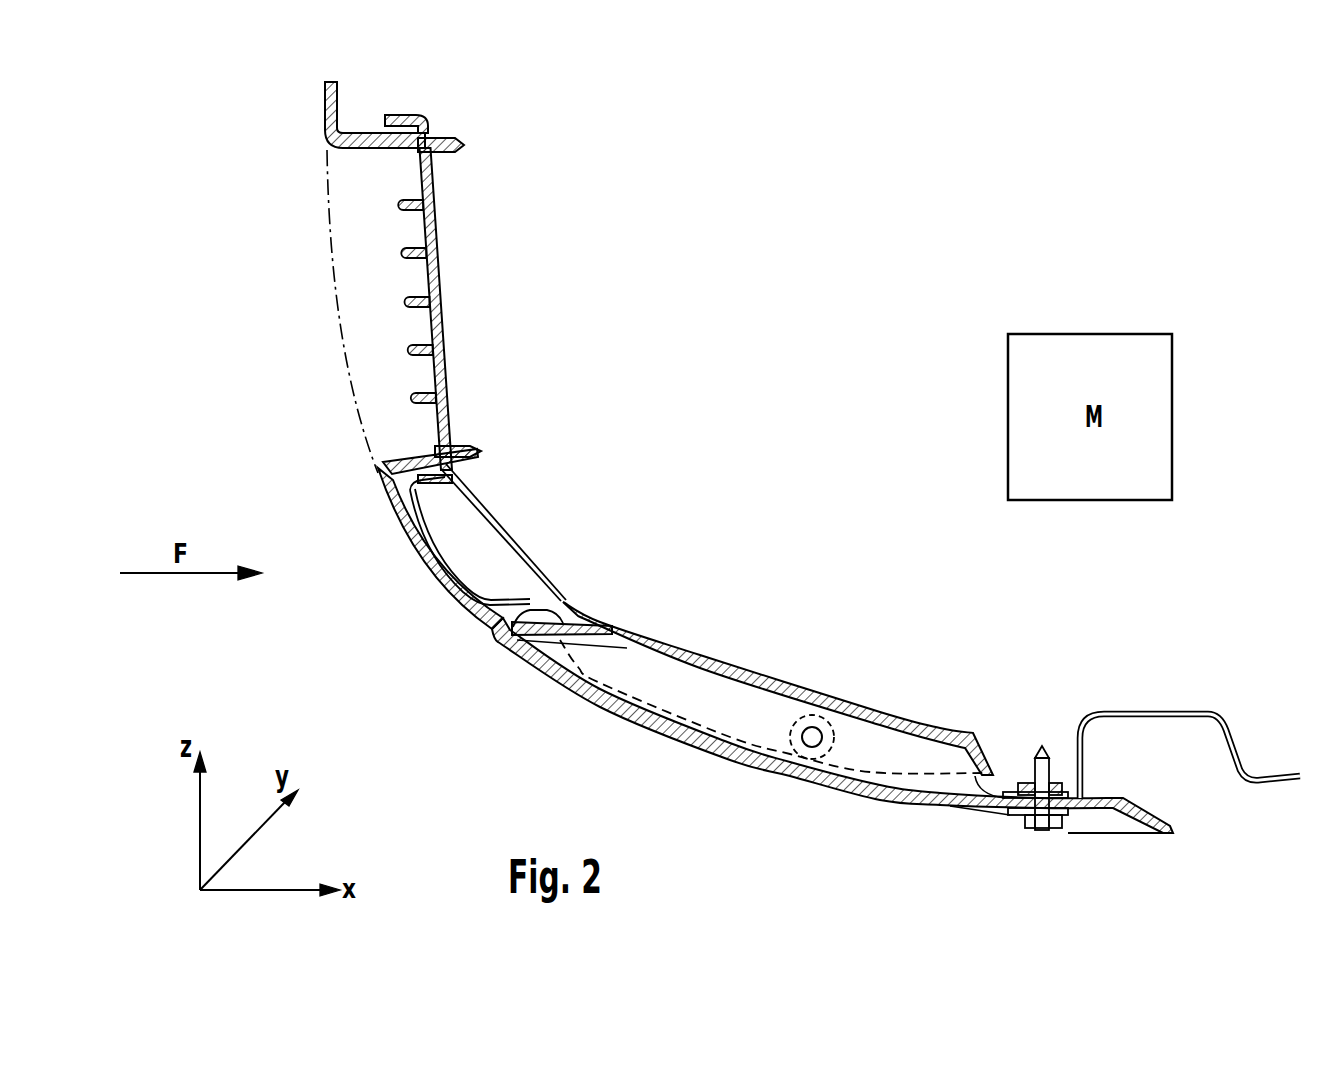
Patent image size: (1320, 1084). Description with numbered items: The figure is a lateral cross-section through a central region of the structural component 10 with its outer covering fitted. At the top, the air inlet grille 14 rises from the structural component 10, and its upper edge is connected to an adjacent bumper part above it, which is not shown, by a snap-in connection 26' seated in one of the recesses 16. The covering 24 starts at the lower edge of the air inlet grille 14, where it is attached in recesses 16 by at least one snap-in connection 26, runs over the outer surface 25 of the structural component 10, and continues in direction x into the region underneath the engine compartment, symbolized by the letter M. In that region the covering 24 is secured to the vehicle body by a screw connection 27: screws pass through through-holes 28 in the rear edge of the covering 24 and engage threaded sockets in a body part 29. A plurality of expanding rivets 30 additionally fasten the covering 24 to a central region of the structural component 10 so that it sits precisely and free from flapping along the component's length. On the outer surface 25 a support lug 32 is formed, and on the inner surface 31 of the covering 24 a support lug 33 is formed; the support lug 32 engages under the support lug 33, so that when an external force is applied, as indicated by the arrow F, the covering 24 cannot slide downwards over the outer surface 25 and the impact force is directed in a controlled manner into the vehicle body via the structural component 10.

The structural component 10 is at (483, 566).
The air inlet grille 14 is at (435, 272).
The recesses 16 is at (427, 133).
The covering 24 is at (523, 650).
The outer surface 25 is at (440, 580).
The snap-in connection 26 is at (491, 425).
The snap-in connection 26' is at (481, 114).
The screw connection 27 is at (1038, 774).
The through-holes 28 is at (1070, 812).
The body part 29 is at (1150, 713).
The expanding rivets 30 is at (816, 737).
The inner surface 31 is at (410, 523).
The support lug 32 is at (558, 613).
The support lug 33 is at (525, 607).